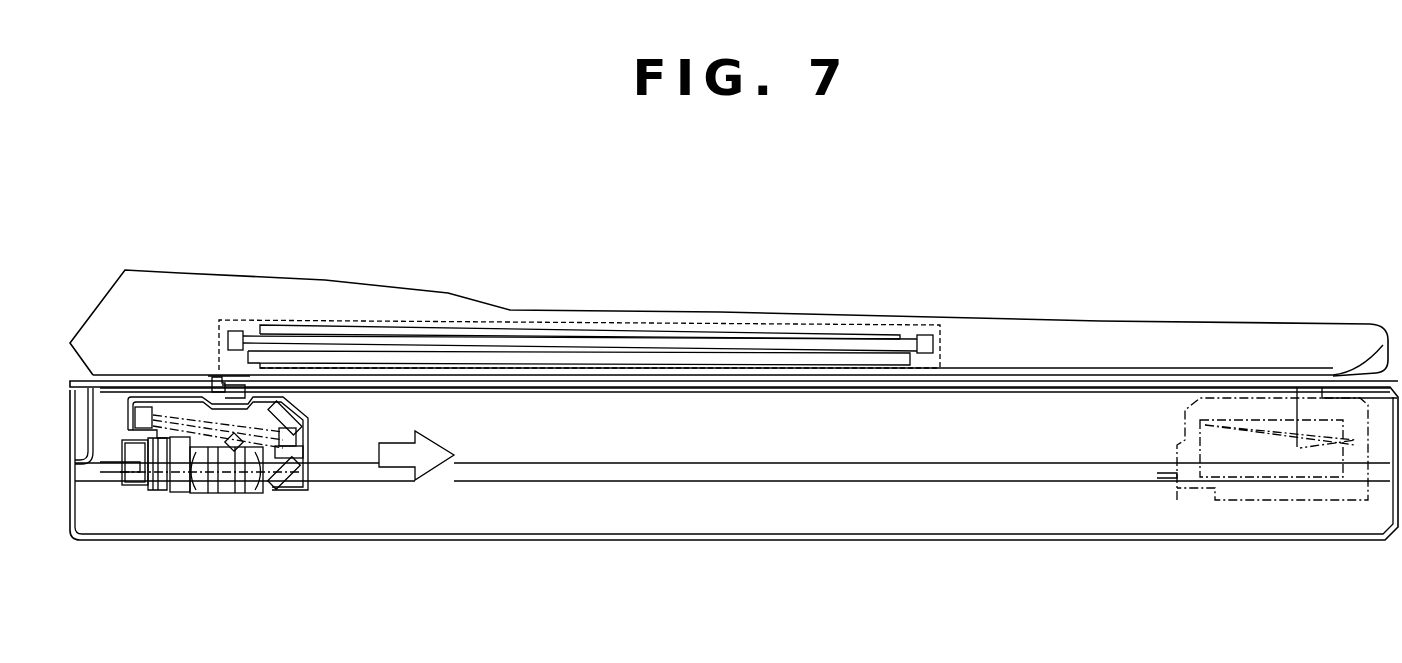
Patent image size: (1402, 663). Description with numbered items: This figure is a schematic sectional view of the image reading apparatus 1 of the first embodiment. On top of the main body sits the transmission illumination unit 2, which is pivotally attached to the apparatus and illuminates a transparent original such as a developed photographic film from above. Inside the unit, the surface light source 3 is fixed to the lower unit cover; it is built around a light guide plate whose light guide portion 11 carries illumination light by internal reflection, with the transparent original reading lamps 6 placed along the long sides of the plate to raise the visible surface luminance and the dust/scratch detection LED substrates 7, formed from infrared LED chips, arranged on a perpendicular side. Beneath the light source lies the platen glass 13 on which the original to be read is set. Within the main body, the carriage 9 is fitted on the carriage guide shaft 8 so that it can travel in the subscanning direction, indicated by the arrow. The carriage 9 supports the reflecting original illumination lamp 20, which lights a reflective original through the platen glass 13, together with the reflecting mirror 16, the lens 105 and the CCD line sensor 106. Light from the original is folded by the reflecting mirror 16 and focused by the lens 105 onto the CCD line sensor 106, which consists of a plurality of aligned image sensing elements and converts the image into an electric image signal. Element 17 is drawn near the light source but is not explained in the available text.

The image reading apparatus 1 is at (478, 542).
The transmission illumination unit 2 is at (323, 292).
The surface light source 3 is at (695, 313).
The transparent original reading lamp 6 is at (448, 332).
The dust/scratch detection LED substrate 7 is at (572, 356).
The carriage guide shaft 8 is at (572, 474).
The carriage 9 is at (292, 493).
The light guide portion 11 is at (573, 330).
The platen glass 13 is at (633, 390).
The reflecting mirror 16 is at (307, 492).
The reflector plate 17 is at (683, 370).
The reflecting original illumination lamp 20 is at (212, 376).
The lens 105 is at (231, 493).
The CCD line sensor 106 is at (140, 485).